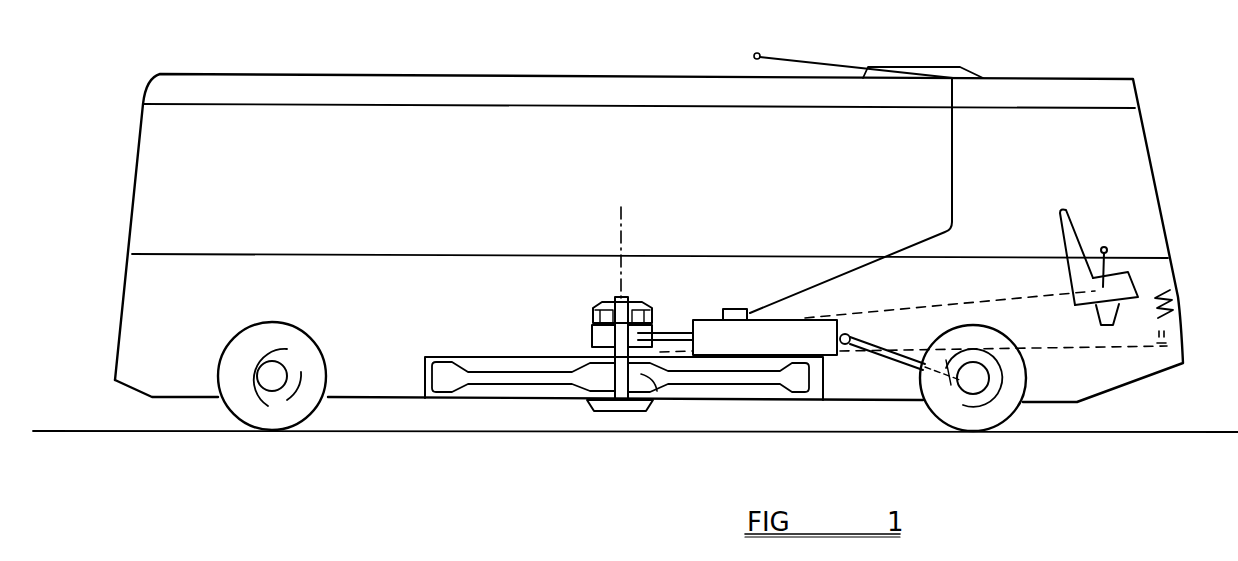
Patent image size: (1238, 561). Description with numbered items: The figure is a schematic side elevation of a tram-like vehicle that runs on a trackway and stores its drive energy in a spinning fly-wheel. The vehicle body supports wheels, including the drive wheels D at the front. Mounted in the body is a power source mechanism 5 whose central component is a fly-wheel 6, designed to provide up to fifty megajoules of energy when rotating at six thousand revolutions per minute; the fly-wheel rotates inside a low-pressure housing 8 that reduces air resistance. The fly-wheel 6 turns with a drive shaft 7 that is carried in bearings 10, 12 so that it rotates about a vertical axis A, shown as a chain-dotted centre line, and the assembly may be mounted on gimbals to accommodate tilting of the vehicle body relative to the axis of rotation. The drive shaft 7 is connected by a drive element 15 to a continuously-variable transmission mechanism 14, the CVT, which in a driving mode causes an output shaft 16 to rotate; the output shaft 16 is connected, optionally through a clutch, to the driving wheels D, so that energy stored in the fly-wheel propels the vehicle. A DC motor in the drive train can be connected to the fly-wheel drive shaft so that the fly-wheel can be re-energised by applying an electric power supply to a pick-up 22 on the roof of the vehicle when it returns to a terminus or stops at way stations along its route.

The bearing 10 is at (120, 318).
The power source mechanism 5 is at (527, 400).
The fly-wheel 6 is at (444, 400).
The drive shaft 7 is at (651, 390).
The low-pressure housing 8 is at (490, 356).
The bearing 12 is at (648, 301).
The continuously-variable transmission mechanism 14 is at (710, 320).
The drive element 15 is at (678, 332).
The output shaft 16 is at (877, 347).
The pick-up 22 is at (802, 24).
The vertical axis A is at (620, 243).
The drive wheels D is at (975, 421).